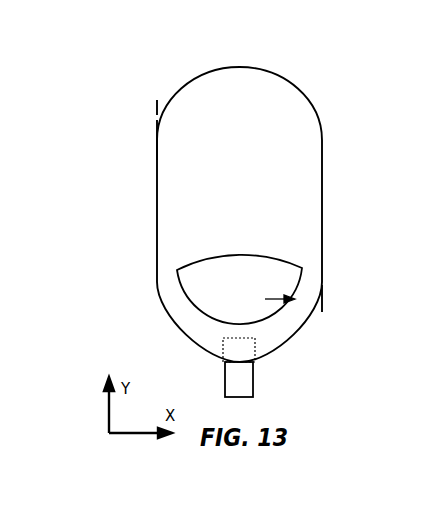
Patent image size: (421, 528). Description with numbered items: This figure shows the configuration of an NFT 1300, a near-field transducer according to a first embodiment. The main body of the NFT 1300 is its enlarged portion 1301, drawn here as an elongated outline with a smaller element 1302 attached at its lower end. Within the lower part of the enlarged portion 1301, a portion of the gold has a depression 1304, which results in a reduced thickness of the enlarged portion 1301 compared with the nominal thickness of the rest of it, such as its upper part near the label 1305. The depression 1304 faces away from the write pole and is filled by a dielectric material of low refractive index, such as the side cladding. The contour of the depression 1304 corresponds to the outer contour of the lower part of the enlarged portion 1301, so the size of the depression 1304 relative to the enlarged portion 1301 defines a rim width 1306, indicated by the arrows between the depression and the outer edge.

The NFT 1300 is at (162, 78).
The enlarged portion 1301 is at (213, 78).
The base connector 1302 is at (232, 380).
The depression 1304 is at (252, 265).
The housing side wall 1305 is at (165, 133).
The rim width 1306 is at (322, 299).